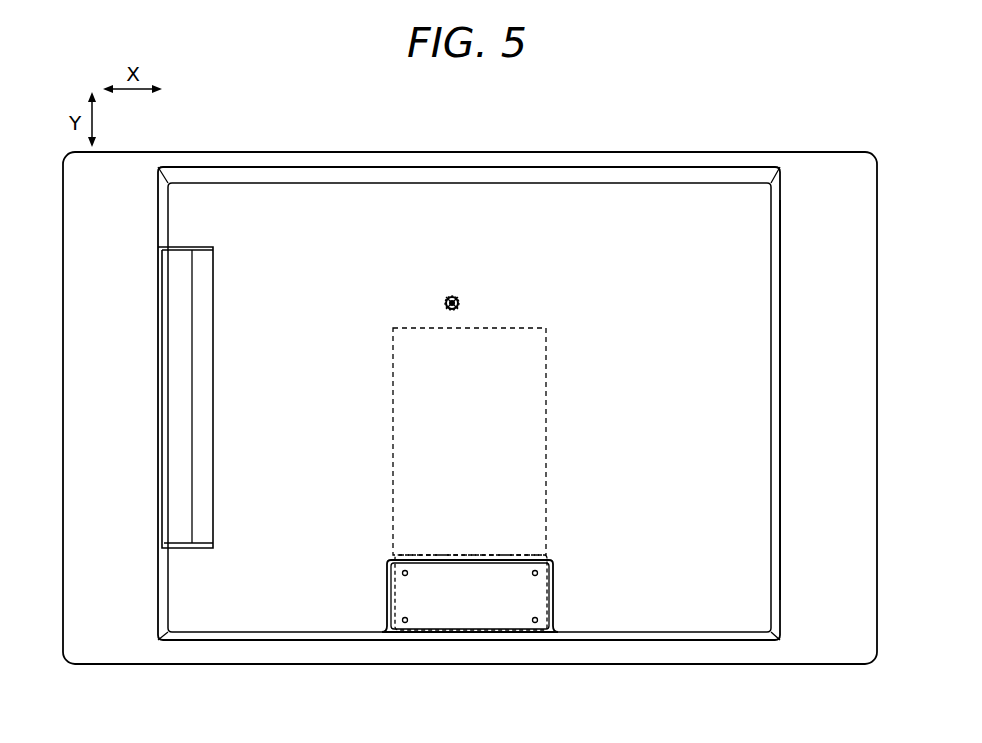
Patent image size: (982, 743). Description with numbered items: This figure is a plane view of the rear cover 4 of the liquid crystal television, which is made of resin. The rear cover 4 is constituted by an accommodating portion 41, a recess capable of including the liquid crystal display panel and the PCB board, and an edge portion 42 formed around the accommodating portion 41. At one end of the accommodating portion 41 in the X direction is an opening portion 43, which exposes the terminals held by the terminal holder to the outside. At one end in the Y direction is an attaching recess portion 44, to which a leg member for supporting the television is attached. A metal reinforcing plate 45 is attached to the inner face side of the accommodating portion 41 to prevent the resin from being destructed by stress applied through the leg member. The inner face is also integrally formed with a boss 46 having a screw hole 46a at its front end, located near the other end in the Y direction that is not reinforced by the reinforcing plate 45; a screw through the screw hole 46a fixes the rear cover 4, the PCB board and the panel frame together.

The rear cover 4 is at (833, 133).
The accommodating portion 41 is at (707, 210).
The edge portion 42 is at (794, 183).
The opening portion 43 is at (213, 512).
The attaching recess portion 44 is at (428, 592).
The reinforcing plate 45 is at (525, 485).
The boss 46 is at (462, 295).
The screw hole 46a is at (452, 297).